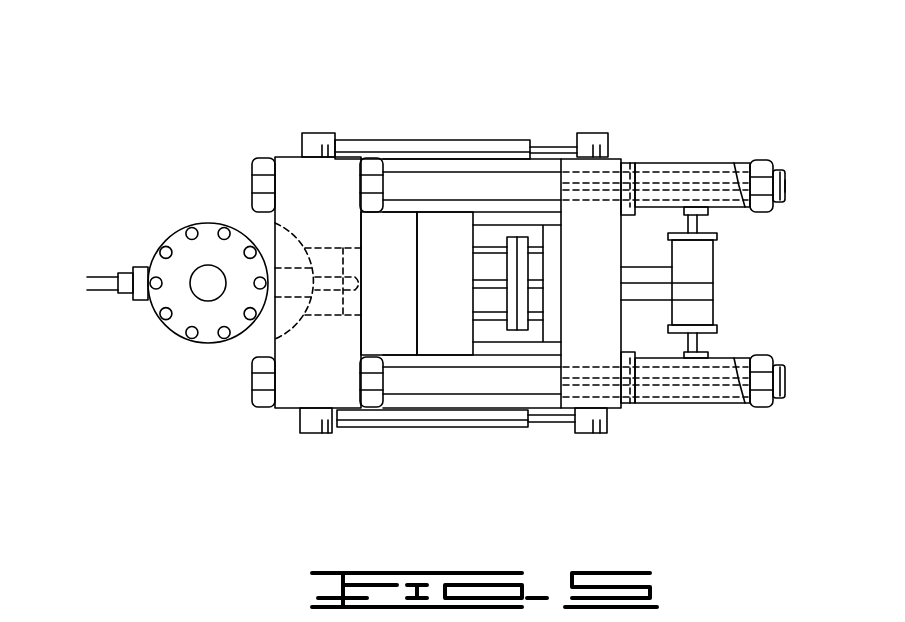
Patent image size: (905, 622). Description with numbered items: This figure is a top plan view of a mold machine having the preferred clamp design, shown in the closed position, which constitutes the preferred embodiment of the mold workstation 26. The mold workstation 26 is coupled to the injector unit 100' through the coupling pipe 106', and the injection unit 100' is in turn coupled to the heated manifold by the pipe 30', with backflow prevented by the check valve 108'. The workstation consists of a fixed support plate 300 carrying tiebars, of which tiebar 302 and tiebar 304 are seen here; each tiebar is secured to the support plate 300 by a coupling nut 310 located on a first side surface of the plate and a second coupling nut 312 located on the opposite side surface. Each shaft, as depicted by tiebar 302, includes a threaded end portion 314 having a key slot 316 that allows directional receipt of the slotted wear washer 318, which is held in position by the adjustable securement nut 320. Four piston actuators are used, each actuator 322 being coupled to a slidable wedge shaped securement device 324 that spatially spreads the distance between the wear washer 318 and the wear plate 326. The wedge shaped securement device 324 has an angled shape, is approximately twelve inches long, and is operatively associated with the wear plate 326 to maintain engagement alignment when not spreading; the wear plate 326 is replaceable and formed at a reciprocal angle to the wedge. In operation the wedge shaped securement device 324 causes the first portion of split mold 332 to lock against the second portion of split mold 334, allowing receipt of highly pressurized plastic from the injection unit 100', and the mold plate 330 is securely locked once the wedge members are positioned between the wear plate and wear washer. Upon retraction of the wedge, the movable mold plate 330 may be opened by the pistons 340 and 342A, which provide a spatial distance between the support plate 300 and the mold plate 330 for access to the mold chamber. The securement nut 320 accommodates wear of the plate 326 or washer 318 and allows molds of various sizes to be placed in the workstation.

The mold workstation 26 is at (648, 85).
The pipe 30' is at (65, 257).
The injector unit 100' is at (161, 306).
The coupling pipe 106' is at (256, 309).
The check valve 108' is at (84, 308).
The fixed support plate 300 is at (290, 410).
The tiebar 302 is at (427, 183).
The tiebar 304 is at (467, 385).
The coupling nut 310 is at (263, 158).
The second coupling nut 312 is at (373, 165).
The threaded end portion 314 is at (783, 170).
The key slot 316 is at (788, 185).
The slotted wear washer 318 is at (760, 162).
The adjustable securement nut 320 is at (745, 165).
The piston actuator 322 is at (713, 250).
The slidable wedge shaped securement device 324 is at (652, 163).
The wear plate 326 is at (630, 163).
The mold plate 330 is at (600, 405).
The first portion of split mold 332 is at (403, 353).
The second portion of split mold 334 is at (447, 353).
The piston 340 is at (392, 140).
The piston 342A is at (515, 430).